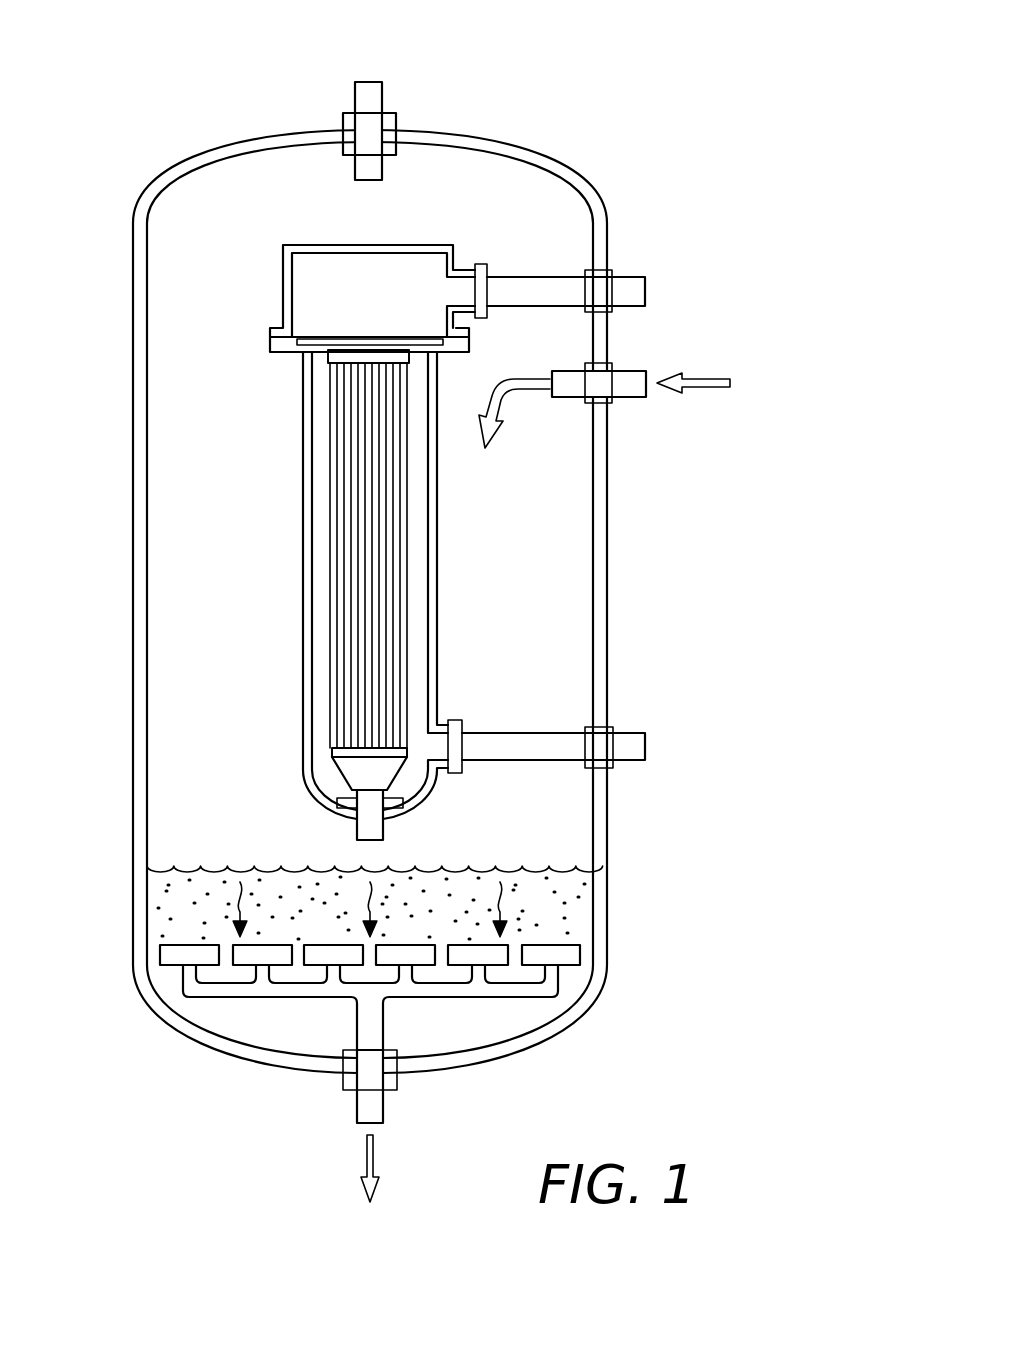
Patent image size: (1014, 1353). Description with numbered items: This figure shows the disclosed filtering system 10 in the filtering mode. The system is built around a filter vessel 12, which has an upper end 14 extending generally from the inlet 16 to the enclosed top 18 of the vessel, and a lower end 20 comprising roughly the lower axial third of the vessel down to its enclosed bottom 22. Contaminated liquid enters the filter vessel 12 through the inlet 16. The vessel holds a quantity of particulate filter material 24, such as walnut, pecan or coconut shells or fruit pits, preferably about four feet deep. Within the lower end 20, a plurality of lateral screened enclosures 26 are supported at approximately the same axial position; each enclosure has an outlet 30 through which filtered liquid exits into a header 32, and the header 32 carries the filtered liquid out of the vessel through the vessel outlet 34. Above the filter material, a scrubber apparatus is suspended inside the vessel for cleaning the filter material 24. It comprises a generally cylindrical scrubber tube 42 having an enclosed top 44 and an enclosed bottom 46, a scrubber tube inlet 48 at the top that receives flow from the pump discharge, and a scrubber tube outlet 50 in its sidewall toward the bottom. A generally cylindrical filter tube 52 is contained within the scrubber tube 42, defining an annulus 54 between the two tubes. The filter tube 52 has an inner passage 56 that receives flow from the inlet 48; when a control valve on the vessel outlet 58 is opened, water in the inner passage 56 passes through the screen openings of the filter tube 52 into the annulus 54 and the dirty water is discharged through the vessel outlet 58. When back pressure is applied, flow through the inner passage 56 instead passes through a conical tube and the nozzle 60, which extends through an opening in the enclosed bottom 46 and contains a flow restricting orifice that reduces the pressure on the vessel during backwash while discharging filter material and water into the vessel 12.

The filtering system 10 is at (88, 170).
The filter vessel 12 is at (612, 540).
The upper end 14 is at (612, 226).
The inlet 16 is at (622, 372).
The enclosed top 18 is at (502, 143).
The lower end 20 is at (612, 825).
The enclosed bottom 22 is at (573, 1018).
The particulate filter material 24 is at (568, 906).
The lateral screened enclosure 26 is at (572, 960).
The outlet 30 is at (542, 975).
The header 32 is at (448, 990).
The vessel outlet 34 is at (365, 1108).
The scrubber tube 42 is at (302, 456).
The enclosed top 44 is at (437, 245).
The enclosed bottom 46 is at (420, 815).
The scrubber tube inlet 48 is at (460, 280).
The scrubber tube outlet 50 is at (437, 735).
The filter tube 52 is at (330, 526).
The annulus 54 is at (320, 583).
The inner passage 56 is at (355, 337).
The vessel outlet 58 is at (632, 738).
The nozzle 60 is at (358, 828).